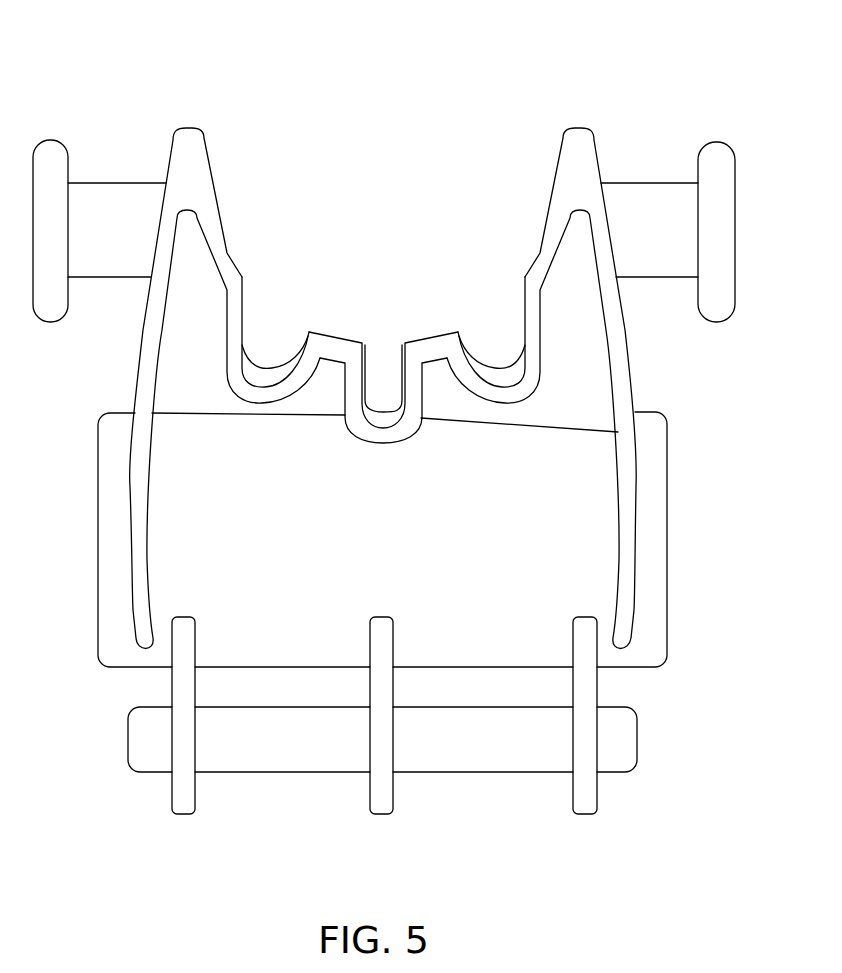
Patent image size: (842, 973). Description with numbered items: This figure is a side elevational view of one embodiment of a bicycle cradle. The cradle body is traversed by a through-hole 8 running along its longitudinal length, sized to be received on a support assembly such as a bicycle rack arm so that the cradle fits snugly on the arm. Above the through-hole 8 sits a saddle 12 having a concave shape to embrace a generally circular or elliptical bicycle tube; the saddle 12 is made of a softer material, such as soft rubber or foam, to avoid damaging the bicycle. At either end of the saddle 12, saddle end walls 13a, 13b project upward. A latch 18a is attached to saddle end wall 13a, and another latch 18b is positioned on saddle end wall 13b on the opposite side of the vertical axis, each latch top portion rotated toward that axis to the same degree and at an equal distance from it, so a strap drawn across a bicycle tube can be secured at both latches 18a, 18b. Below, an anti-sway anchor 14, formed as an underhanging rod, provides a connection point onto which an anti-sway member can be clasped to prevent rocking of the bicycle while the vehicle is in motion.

The through-hole 8 is at (630, 380).
The saddle 12 is at (363, 343).
The saddle end wall 13a is at (190, 128).
The saddle end wall 13b is at (578, 128).
The anti-sway anchor 14 is at (637, 742).
The latch 18a is at (110, 183).
The latch 18b is at (657, 183).